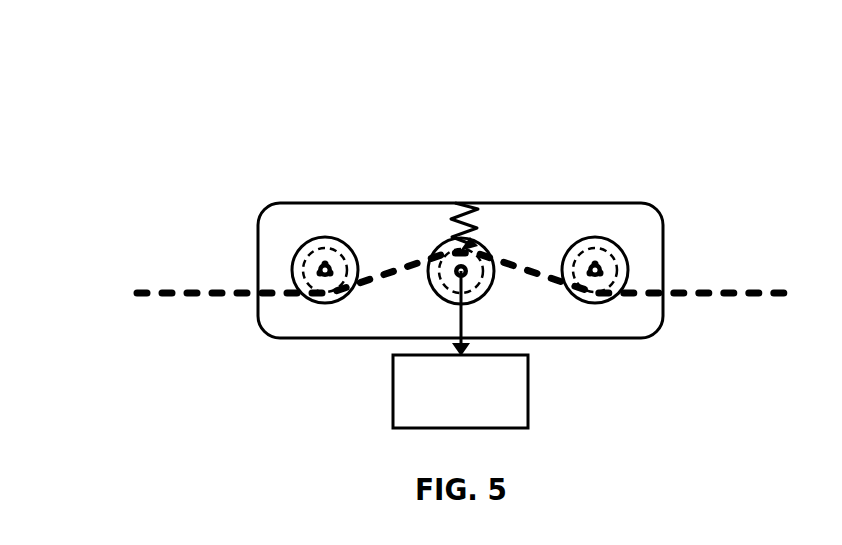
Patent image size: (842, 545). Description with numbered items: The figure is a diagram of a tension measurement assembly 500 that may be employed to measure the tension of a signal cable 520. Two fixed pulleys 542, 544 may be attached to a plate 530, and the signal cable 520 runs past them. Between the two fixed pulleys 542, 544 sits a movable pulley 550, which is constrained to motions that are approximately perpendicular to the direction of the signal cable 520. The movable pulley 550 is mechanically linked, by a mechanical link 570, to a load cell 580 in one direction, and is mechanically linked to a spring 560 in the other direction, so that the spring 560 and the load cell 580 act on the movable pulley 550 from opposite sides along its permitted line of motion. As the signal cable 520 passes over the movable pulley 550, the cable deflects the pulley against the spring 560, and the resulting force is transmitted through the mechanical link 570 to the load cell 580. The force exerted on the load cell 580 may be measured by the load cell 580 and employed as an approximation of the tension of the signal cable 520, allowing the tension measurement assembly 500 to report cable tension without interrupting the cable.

The tension measurement assembly 500 is at (122, 59).
The signal cable 520 is at (218, 292).
The plate 530 is at (313, 205).
The fixed pulley 542 is at (303, 247).
The fixed pulley 544 is at (573, 247).
The movable pulley 550 is at (438, 248).
The spring 560 is at (460, 206).
The mechanical link 570 is at (462, 318).
The load cell 580 is at (460, 391).